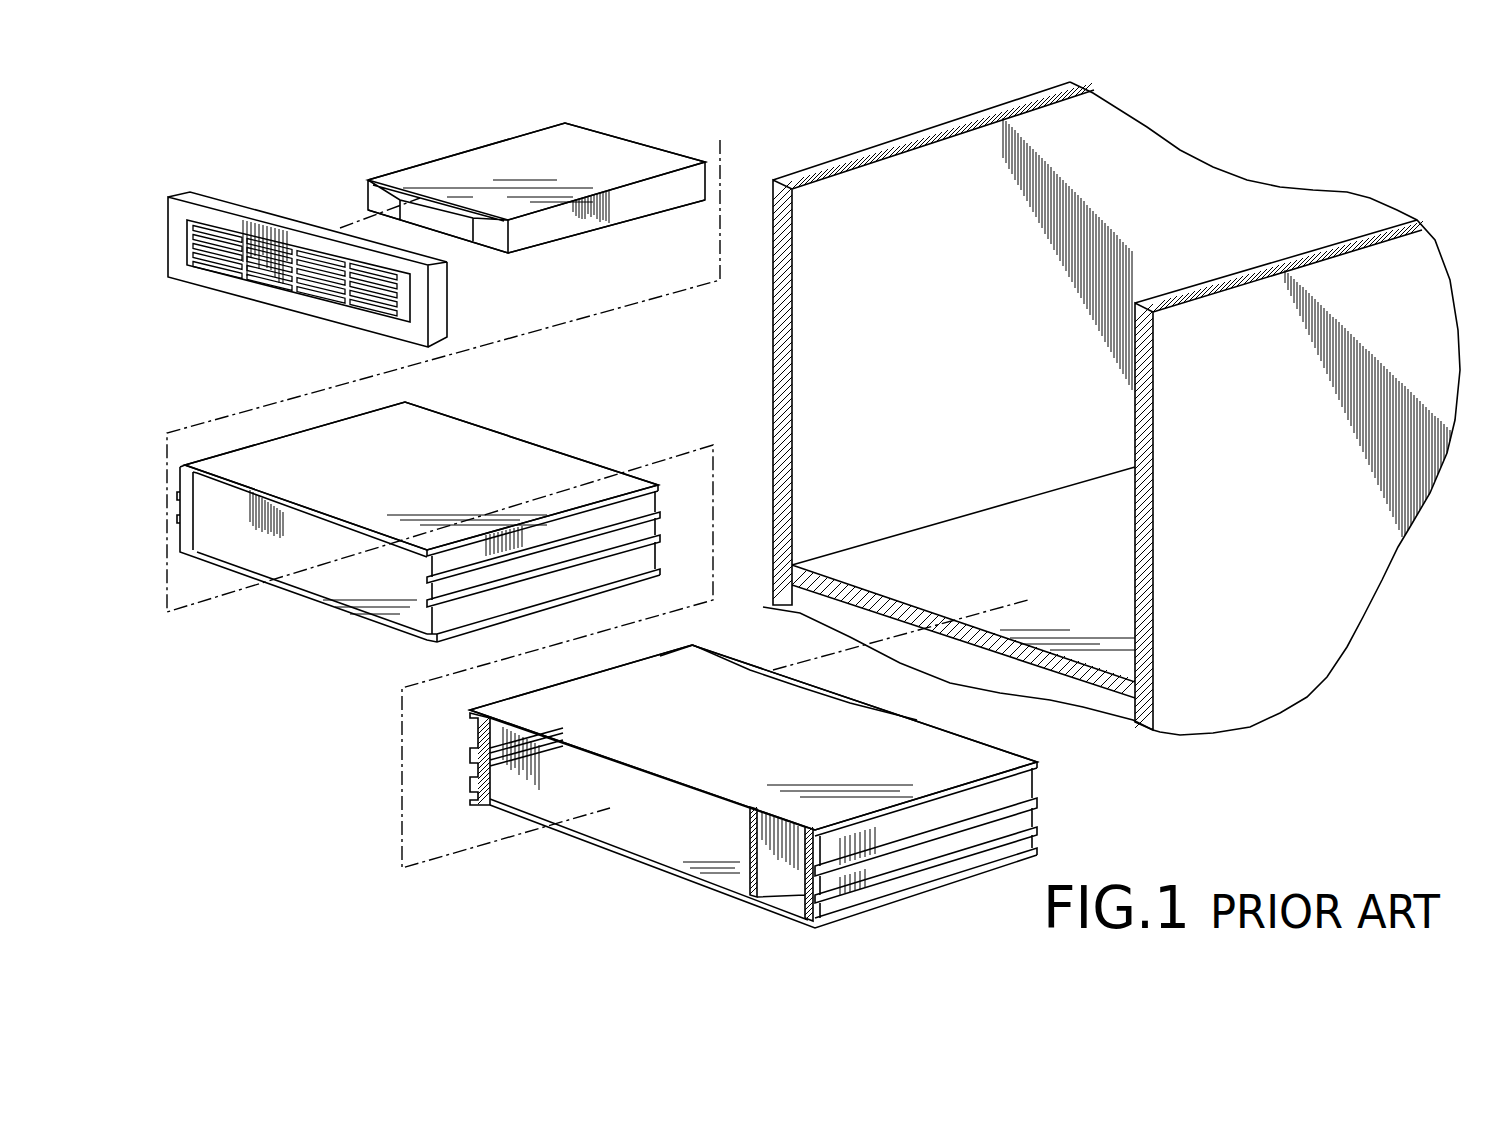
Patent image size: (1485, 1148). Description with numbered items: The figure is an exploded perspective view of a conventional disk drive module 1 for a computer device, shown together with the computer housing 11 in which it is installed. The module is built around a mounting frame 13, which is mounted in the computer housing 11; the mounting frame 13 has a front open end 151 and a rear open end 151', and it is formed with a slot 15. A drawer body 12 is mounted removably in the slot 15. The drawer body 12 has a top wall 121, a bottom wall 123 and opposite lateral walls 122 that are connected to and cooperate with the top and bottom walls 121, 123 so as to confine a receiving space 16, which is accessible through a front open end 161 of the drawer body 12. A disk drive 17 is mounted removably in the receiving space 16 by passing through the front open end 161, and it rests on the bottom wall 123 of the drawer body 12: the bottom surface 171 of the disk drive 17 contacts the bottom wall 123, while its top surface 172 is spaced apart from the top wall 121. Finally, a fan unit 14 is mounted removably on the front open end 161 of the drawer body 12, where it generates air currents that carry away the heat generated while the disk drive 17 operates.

The disk drive module 1 is at (210, 372).
The computer housing 11 is at (770, 253).
The drawer body 12 is at (444, 405).
The top wall 121 is at (513, 453).
The lateral walls 122 is at (243, 517).
The bottom wall 123 is at (548, 608).
The mounting frame 13 is at (592, 676).
The fan unit 14 is at (462, 318).
The slot 15 is at (687, 855).
The front open end 151 is at (649, 859).
The rear open end 151' is at (783, 737).
The receiving space 16 is at (392, 592).
The front open end 161 is at (320, 587).
The disk drive 17 is at (495, 138).
The bottom surface 171 is at (530, 250).
The top surface 172 is at (472, 172).